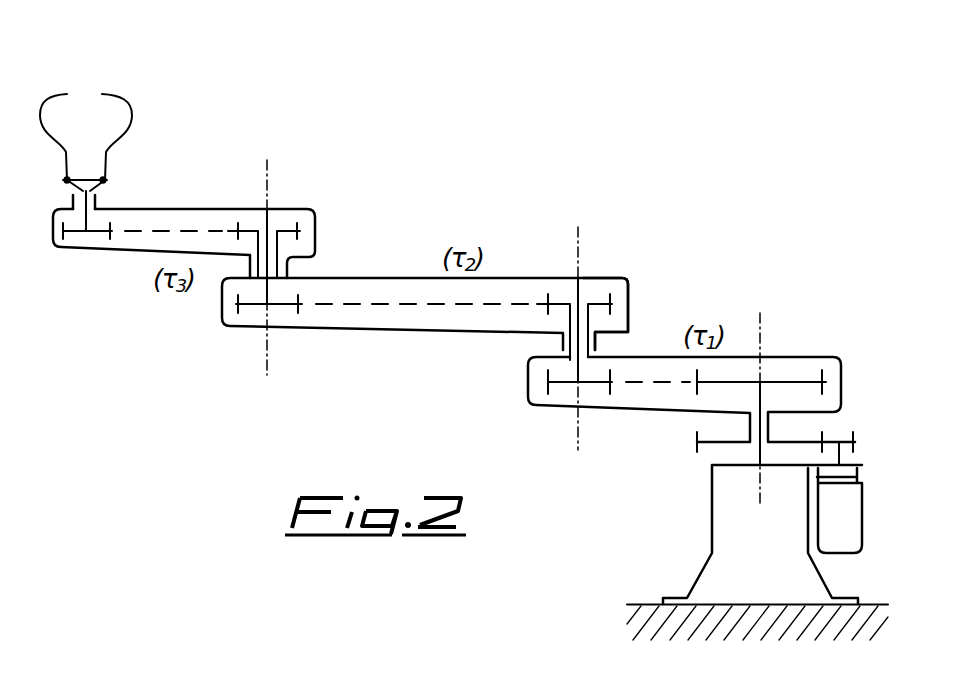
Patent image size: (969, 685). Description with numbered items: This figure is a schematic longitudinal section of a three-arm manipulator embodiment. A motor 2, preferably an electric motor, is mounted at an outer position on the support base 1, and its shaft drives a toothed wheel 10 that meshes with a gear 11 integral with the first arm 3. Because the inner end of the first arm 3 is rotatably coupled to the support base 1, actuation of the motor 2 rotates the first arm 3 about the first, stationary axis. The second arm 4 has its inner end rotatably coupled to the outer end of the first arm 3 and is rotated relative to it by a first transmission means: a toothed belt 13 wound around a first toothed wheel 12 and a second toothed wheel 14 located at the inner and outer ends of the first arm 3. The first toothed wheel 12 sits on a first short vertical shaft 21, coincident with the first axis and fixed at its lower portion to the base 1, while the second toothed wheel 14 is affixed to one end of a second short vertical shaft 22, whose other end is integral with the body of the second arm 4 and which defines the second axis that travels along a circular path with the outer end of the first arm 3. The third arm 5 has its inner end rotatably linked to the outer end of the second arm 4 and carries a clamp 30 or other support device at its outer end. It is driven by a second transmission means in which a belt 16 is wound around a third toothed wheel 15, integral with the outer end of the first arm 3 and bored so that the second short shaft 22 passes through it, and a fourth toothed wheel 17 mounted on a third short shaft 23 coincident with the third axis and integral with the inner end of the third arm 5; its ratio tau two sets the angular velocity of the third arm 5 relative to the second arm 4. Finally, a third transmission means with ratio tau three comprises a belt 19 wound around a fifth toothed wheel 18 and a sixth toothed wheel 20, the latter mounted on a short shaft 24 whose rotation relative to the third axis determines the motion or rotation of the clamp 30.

The support base 1 is at (715, 545).
The motor 2 is at (853, 532).
The first arm 3 is at (657, 355).
The second arm 4 is at (398, 277).
The third arm 5 is at (193, 208).
The toothed wheel 10 is at (855, 447).
The gear 11 is at (697, 440).
The first toothed wheel 12 is at (793, 378).
The toothed belt 13 is at (633, 383).
The second toothed wheel 14 is at (548, 400).
The third toothed wheel 15 is at (597, 297).
The belt 16 is at (337, 308).
The fourth toothed wheel 17 is at (250, 323).
The fifth toothed wheel 18 is at (250, 217).
The belt 19 is at (137, 232).
The sixth toothed wheel 20 is at (70, 247).
The first short vertical shaft 21 is at (750, 457).
The second short vertical shaft 22 is at (545, 358).
The third short shaft 23 is at (272, 218).
The short shaft 24 is at (108, 212).
The clamp 30 is at (127, 102).